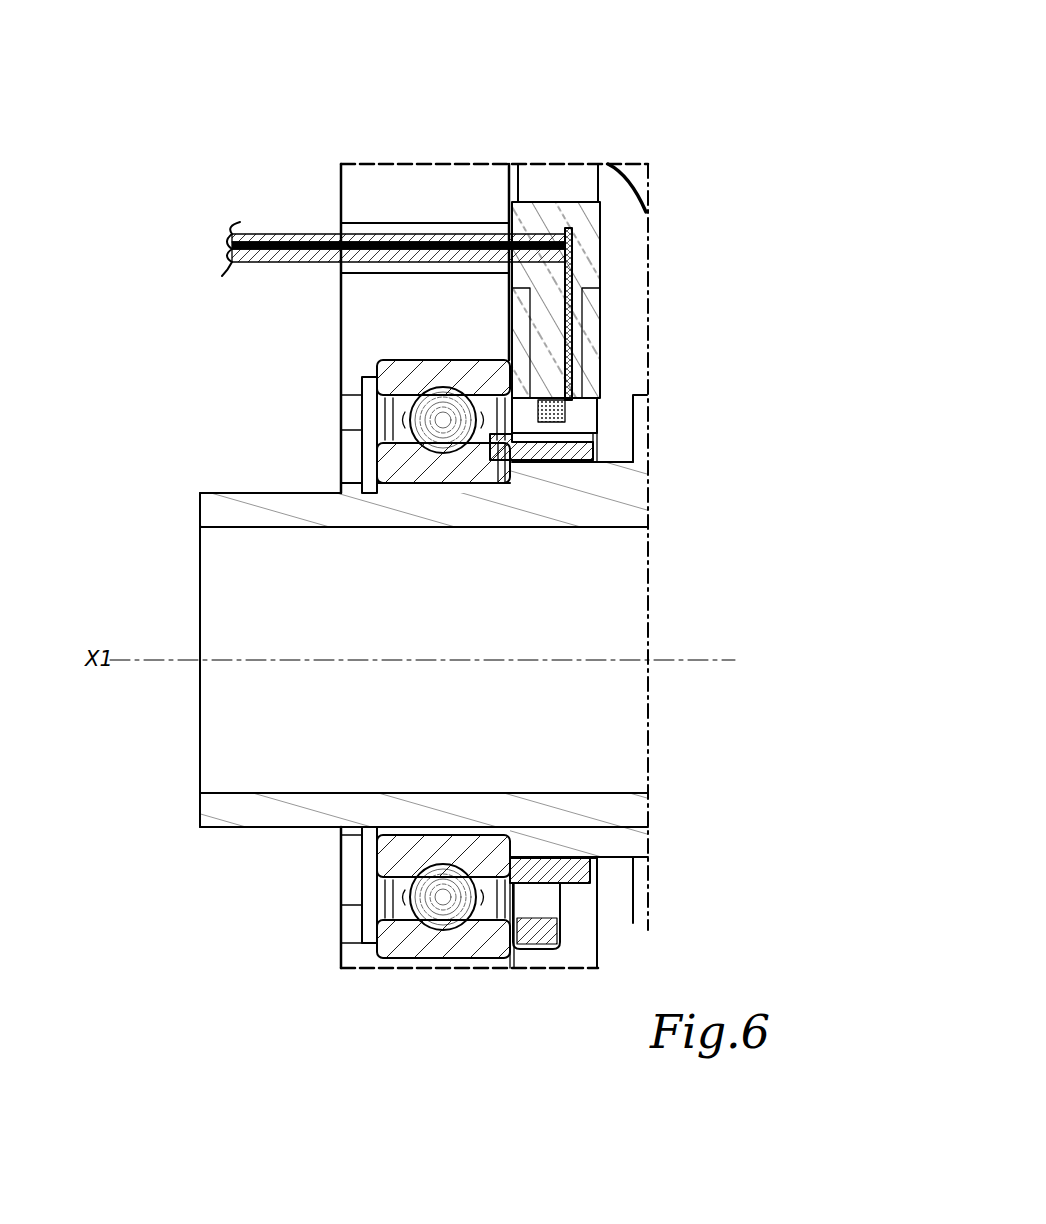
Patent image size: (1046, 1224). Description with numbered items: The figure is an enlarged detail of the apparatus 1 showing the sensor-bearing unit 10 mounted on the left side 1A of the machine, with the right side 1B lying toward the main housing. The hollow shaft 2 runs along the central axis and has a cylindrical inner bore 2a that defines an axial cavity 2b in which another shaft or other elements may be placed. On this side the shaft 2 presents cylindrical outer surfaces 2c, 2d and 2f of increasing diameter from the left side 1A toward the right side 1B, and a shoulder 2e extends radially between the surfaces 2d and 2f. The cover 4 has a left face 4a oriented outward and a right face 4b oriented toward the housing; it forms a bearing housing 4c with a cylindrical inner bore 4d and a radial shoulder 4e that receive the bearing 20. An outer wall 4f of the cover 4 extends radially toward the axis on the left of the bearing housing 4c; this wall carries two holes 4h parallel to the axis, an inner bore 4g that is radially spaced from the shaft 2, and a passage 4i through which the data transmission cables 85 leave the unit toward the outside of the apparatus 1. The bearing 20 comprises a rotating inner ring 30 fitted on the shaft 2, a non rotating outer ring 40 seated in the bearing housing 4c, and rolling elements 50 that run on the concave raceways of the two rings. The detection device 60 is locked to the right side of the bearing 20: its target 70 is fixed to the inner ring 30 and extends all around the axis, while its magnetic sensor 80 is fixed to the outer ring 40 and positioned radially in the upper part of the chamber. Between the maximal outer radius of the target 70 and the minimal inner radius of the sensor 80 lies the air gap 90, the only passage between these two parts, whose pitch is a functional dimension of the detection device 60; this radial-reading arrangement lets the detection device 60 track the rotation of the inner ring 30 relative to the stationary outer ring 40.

The apparatus 1 is at (146, 116).
The left side 1A is at (176, 456).
The right side 1B is at (742, 468).
The shaft 2 is at (248, 812).
The cylindrical inner bore 2a is at (290, 785).
The axial cavity 2b is at (424, 660).
The cylindrical outer surface 2c is at (290, 478).
The cylindrical outer surface 2d is at (425, 468).
The shoulder 2e is at (500, 470).
The cylindrical outer surface 2f is at (648, 430).
The cover 4 is at (413, 180).
The left face 4a is at (335, 352).
The right face 4b is at (518, 182).
The bearing housing 4c is at (455, 1063).
The cylindrical inner bore 4d is at (445, 928).
The radial shoulder 4e is at (395, 968).
The outer wall 4f is at (365, 870).
The inner bore 4g is at (347, 497).
The holes 4h is at (348, 420).
The passage 4i is at (340, 222).
The sensor-bearing unit 10 is at (170, 335).
The bearing 20 is at (315, 990).
The rotating inner ring 30 is at (482, 860).
The non rotating outer ring 40 is at (485, 950).
The rolling elements 50 is at (437, 880).
The detection device 60 is at (679, 293).
The target 70 is at (545, 455).
The sensor 80 is at (588, 210).
The data transmission cables 85 is at (278, 233).
The air gap 90 is at (600, 430).